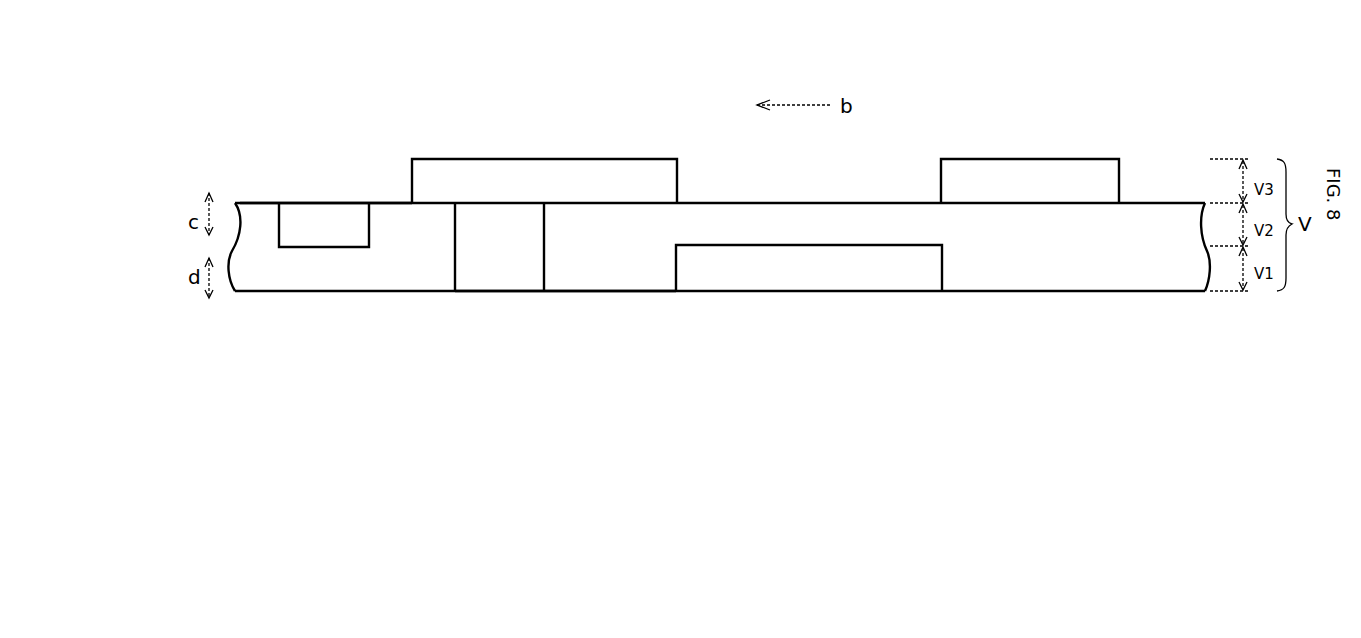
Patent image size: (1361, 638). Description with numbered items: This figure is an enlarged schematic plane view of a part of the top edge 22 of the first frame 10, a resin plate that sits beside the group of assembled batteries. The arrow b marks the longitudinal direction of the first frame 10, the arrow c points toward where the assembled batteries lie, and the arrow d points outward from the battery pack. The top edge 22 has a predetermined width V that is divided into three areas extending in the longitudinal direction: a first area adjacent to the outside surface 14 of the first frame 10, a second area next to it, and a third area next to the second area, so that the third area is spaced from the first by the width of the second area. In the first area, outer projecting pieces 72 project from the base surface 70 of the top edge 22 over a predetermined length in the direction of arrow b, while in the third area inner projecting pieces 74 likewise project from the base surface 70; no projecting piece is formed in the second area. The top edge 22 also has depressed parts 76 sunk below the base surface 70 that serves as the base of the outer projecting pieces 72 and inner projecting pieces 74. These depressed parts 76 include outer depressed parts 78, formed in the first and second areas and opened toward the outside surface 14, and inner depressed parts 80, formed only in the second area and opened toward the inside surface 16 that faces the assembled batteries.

The first frame 10 is at (718, 249).
The outside surface 14 is at (270, 291).
The inside surface 16 is at (265, 201).
The top edge 22 is at (718, 250).
The base surface 70 is at (598, 274).
The outer projecting pieces 72 is at (795, 274).
The inner projecting pieces 74 is at (545, 170).
The depressed parts 76 is at (369, 297).
The outer depressed parts 78 is at (456, 247).
The inner depressed parts 80 is at (328, 247).